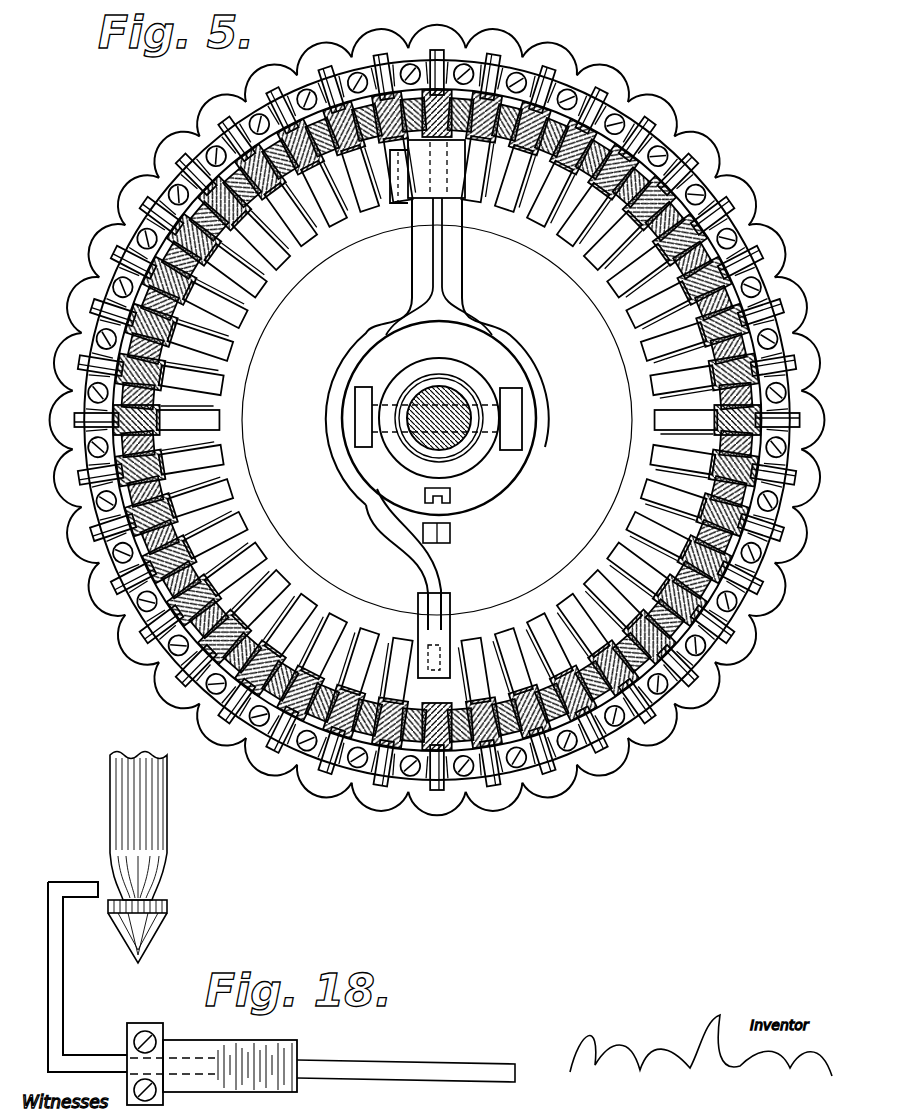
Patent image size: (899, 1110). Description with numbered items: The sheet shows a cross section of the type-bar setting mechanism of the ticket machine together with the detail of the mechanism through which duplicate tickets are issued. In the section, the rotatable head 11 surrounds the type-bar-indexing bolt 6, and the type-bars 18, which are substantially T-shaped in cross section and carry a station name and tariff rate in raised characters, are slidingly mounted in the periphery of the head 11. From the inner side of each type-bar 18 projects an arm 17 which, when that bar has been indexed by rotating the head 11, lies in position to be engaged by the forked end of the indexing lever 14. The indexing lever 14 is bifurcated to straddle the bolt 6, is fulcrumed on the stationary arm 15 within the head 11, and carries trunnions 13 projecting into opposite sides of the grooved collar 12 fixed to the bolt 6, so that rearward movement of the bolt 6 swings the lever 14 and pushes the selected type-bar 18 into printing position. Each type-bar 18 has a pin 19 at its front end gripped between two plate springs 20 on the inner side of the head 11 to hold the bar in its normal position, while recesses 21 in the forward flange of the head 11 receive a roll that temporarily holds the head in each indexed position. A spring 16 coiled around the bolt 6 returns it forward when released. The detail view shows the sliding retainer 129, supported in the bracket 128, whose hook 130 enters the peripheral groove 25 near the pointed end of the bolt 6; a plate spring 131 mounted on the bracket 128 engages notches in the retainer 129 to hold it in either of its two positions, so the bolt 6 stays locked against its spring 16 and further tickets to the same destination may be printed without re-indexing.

In FIG. 5, the type-bar-indexing bolt 6 is at (453, 443).
In FIG. 18, the type-bar-indexing bolt 6 is at (168, 812).
In FIG. 5, the rotatable head 11 is at (332, 274).
In FIG. 5, the grooved collar 12 is at (478, 454).
In FIG. 5, the trunnions 13 is at (356, 422).
In FIG. 5, the indexing lever 14 is at (450, 613).
In FIG. 5, the stationary arm 15 is at (420, 258).
In FIG. 5, the spring 16 is at (456, 465).
In FIG. 5, the arm 17 is at (570, 237).
In FIG. 5, the type-bars 18 is at (332, 270).
In FIG. 5, the pin 19 is at (738, 235).
In FIG. 5, the plate springs 20 is at (100, 546).
In FIG. 5, the recesses 21 is at (180, 144).
In FIG. 18, the peripheral groove 25 is at (165, 896).
In FIG. 18, the bracket 128 is at (148, 1023).
In FIG. 18, the sliding retainer 129 is at (62, 995).
In FIG. 18, the hook 130 is at (64, 882).
In FIG. 18, the plate spring 131 is at (206, 1052).